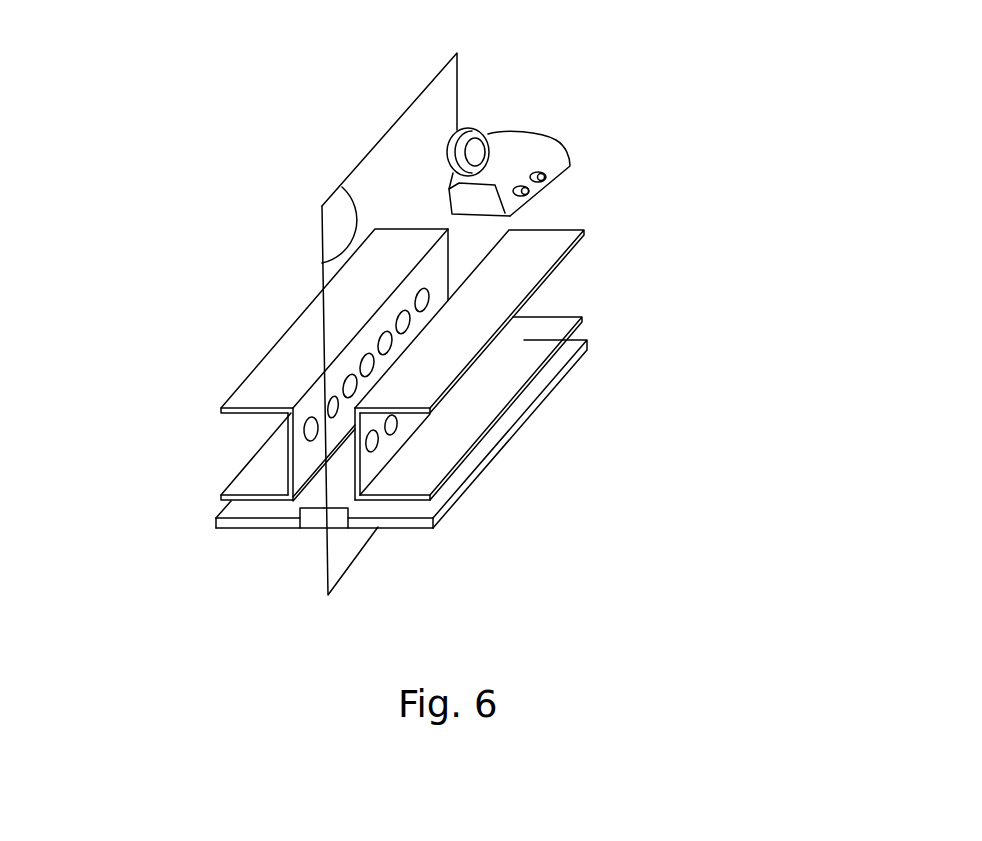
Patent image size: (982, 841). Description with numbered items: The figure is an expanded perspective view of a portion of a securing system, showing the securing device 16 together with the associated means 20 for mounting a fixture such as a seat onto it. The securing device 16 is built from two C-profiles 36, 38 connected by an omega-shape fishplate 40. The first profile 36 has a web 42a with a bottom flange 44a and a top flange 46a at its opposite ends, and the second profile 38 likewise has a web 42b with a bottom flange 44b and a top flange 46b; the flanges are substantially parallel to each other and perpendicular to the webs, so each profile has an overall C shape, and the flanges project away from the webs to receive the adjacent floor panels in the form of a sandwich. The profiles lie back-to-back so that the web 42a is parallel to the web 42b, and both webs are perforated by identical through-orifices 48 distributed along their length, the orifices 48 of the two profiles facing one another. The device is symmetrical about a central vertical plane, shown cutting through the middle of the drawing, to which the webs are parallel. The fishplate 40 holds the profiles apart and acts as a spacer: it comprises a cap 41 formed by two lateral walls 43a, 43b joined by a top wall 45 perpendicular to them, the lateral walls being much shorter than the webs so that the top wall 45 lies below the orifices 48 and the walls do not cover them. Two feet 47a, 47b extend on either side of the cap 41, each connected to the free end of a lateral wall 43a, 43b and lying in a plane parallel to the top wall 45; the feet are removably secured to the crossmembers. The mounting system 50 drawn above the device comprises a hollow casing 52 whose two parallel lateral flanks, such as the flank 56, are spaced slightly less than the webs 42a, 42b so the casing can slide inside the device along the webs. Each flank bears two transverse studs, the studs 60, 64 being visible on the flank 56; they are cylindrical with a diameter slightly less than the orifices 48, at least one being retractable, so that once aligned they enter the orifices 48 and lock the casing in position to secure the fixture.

The securing device 16 is at (609, 262).
The means for mounting 20 is at (560, 124).
The C-profile 36 is at (280, 361).
The C-profile 38 is at (467, 347).
The omega-shape fishplate 40 is at (215, 519).
The cap 41 is at (340, 476).
The web 42a is at (225, 490).
The web 42b is at (363, 472).
The lateral wall 43a is at (308, 518).
The lateral wall 43b is at (343, 518).
The bottom flange 44a is at (268, 487).
The bottom flange 44b is at (487, 402).
The top wall 45 is at (327, 540).
The top flange 46a is at (258, 386).
The top flange 46b is at (506, 291).
The foot 47a is at (218, 528).
The foot 47b is at (406, 524).
The through-orifices 48 is at (303, 428).
The mounting system 50 is at (540, 114).
The hollow casing 52 is at (557, 157).
The lateral flank 56 is at (510, 202).
The transverse stud 60 is at (526, 194).
The transverse stud 64 is at (546, 178).